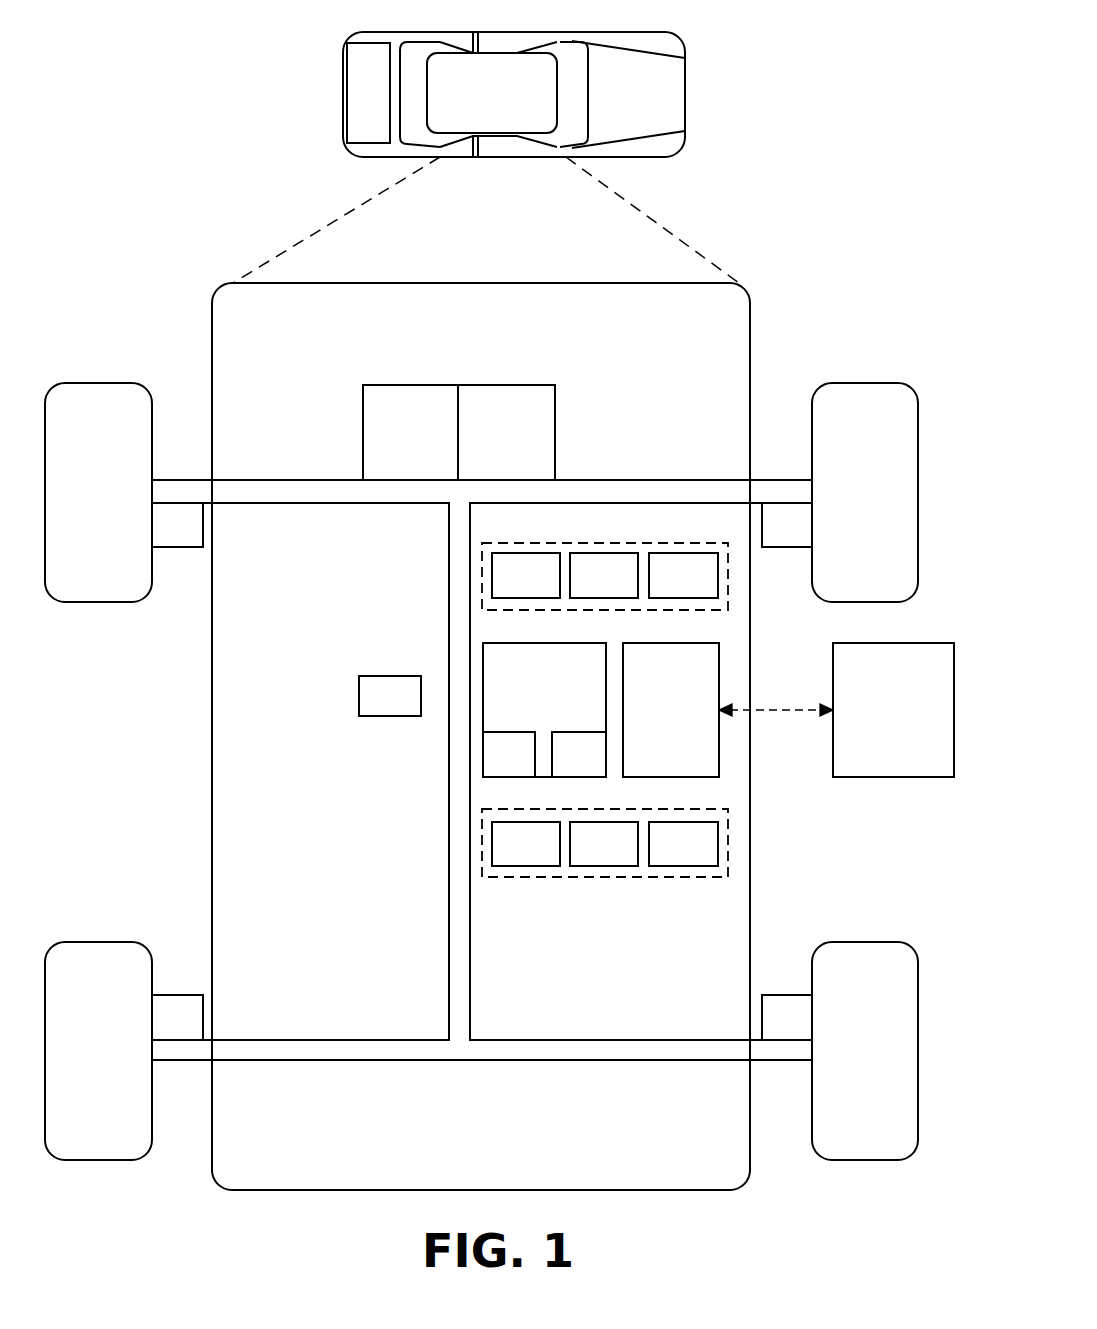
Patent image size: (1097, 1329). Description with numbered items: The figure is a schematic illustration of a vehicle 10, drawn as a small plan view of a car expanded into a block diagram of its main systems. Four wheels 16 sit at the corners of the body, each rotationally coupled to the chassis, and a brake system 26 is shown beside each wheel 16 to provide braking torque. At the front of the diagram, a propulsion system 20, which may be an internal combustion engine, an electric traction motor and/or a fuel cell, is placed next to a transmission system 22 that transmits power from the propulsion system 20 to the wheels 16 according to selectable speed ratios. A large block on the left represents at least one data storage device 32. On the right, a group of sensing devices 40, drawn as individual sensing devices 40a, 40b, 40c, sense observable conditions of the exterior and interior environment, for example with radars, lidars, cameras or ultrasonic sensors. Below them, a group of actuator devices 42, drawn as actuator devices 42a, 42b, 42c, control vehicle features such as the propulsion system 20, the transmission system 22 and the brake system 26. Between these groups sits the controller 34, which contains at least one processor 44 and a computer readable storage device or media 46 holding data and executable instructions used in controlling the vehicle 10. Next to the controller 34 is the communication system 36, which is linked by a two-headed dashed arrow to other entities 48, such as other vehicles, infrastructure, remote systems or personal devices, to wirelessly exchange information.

The vehicle 10 is at (733, 68).
The front wheels 16 is at (86, 507).
The propulsion system 20 is at (397, 448).
The transmission system 22 is at (492, 448).
The brake system 26 is at (164, 537).
The data storage device 32 is at (377, 709).
The controller 34 is at (532, 715).
The communication system 36 is at (659, 721).
The sensing devices 40 is at (605, 576).
The sensing device 40a is at (507, 586).
The sensing device 40b is at (583, 586).
The sensing device 40c is at (662, 586).
The actuator devices 42 is at (605, 843).
The actuator device 42a is at (507, 853).
The actuator device 42b is at (583, 853).
The actuator device 42c is at (662, 853).
The processor 44 is at (495, 766).
The computer readable storage device or media 46 is at (565, 766).
The other entities 48 is at (884, 721).